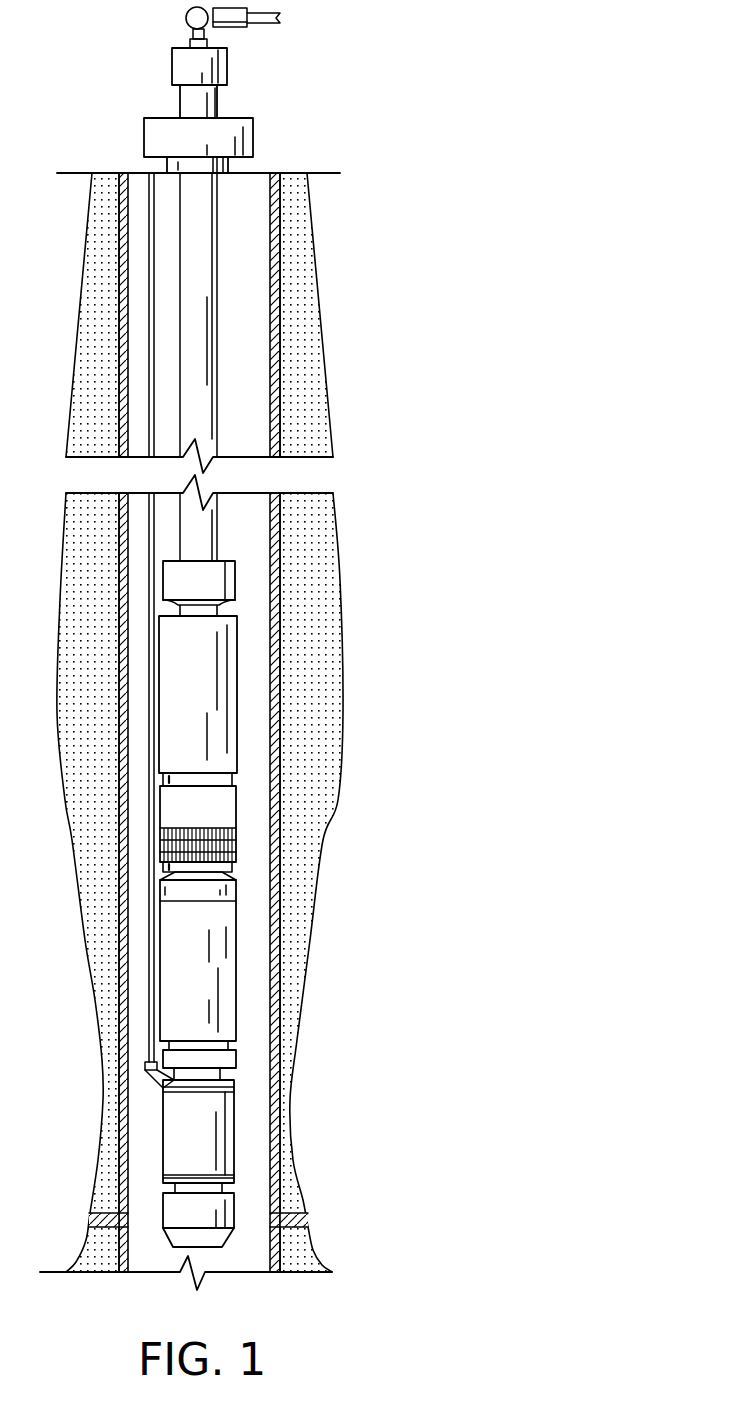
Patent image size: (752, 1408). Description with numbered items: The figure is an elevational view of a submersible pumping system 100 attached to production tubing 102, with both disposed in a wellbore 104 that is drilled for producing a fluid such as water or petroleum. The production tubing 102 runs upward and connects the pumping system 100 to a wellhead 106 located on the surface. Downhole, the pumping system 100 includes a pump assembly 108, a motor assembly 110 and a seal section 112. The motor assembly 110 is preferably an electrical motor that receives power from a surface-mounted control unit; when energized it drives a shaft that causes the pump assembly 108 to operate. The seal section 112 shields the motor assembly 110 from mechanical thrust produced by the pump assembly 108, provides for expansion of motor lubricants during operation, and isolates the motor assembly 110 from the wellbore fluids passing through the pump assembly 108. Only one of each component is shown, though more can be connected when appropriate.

The pumping system 100 is at (385, 775).
The production tubing 102 is at (208, 218).
The wellbore 104 is at (273, 288).
The wellhead 106 is at (187, 67).
The pump assembly 108 is at (230, 739).
The motor assembly 110 is at (228, 1140).
The seal section 112 is at (237, 983).